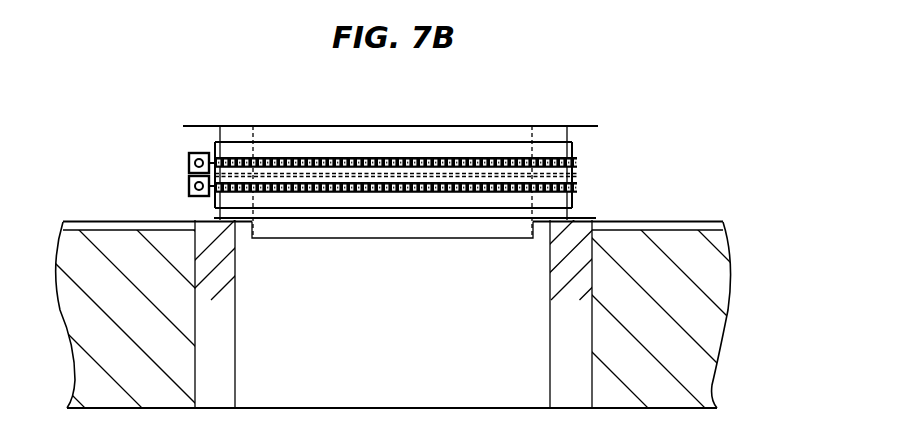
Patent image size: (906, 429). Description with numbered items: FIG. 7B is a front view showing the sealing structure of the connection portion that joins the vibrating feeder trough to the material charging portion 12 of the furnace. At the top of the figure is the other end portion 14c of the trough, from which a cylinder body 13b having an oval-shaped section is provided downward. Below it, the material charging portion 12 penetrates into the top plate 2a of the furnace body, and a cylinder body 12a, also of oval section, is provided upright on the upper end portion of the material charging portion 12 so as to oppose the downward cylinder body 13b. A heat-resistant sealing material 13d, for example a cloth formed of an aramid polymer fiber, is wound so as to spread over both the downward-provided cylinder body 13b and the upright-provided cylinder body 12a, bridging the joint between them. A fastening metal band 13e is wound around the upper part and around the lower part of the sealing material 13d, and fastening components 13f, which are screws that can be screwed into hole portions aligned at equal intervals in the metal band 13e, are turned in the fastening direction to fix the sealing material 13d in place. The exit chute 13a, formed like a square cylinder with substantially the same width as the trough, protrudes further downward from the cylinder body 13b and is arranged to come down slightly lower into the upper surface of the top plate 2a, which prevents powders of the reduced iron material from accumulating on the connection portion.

The top plate 2a is at (698, 220).
The material charging portion 12 is at (594, 283).
The cylinder body 12a is at (563, 216).
The exit chute 13a is at (370, 238).
The cylinder body 13b is at (215, 126).
The heat-resistant sealing material 13d is at (579, 150).
The fastening metal band 13e is at (317, 156).
The fastening components 13f is at (188, 160).
The other end portion 14c is at (428, 115).